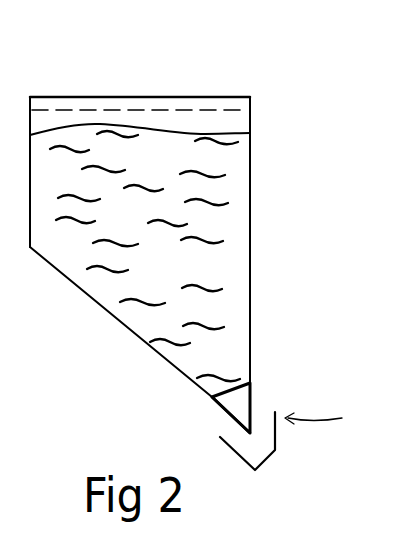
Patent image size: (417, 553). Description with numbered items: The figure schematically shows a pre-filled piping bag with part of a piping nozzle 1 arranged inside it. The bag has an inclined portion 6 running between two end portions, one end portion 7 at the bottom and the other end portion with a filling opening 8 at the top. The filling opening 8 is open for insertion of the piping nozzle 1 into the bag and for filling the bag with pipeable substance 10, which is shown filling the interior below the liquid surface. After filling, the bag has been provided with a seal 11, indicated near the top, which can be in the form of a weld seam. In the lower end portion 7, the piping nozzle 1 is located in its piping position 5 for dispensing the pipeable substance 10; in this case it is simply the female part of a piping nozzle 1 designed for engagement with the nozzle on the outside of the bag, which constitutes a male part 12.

The piping nozzle 1 is at (239, 380).
The piping position 5 is at (322, 418).
The inclined portion 6 is at (132, 337).
The end portion 7 is at (230, 417).
The filling opening 8 is at (133, 100).
The pipeable substance 10 is at (200, 237).
The seal 11 is at (182, 110).
The male part 12 is at (275, 450).